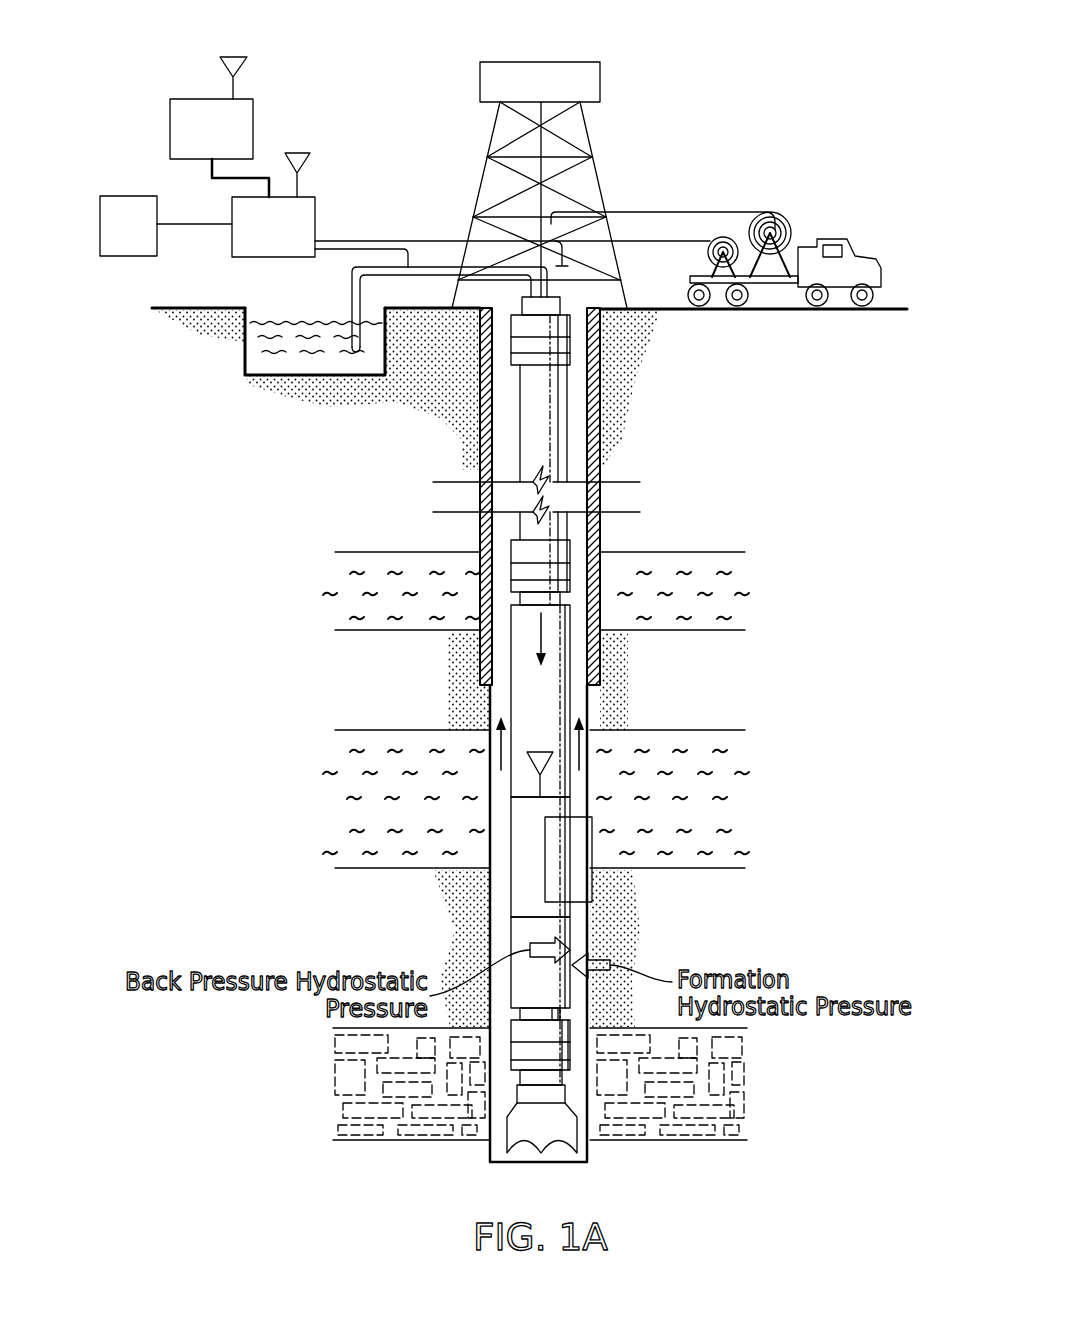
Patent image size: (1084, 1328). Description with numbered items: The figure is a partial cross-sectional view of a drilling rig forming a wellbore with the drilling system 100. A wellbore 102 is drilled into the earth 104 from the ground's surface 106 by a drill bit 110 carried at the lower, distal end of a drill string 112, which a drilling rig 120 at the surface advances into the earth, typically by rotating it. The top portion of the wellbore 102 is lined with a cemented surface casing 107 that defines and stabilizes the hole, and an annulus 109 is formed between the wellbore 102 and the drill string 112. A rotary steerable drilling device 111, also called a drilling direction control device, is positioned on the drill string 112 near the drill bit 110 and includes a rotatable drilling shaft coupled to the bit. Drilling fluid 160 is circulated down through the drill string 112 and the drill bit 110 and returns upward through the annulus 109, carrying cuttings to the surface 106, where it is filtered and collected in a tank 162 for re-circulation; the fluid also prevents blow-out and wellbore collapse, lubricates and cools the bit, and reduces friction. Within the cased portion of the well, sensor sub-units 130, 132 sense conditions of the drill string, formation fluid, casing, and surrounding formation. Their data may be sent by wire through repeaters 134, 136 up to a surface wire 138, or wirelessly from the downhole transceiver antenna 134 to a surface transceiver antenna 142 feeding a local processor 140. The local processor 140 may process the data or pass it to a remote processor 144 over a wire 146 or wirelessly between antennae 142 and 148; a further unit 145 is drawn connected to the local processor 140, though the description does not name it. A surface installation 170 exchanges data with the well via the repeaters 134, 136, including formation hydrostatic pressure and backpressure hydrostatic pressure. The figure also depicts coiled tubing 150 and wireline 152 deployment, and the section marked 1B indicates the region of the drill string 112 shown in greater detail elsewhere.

The drilling system 100 is at (698, 33).
The wellbore 102 is at (589, 941).
The earth 104 is at (447, 434).
The surface 106 is at (176, 305).
The surface casing 107 is at (602, 465).
The annulus 109 is at (507, 445).
The drill bit 110 is at (567, 1135).
The rotary steerable drilling device 111 is at (562, 1050).
The drill string 112 is at (540, 437).
The drilling rig 120 is at (607, 148).
The sensor sub-unit 130 is at (568, 310).
The sensor sub-unit 132 is at (506, 555).
The repeater (downhole transceiver antenna) 134 is at (547, 750).
The repeater 136 is at (545, 345).
The surface wire 138 is at (370, 238).
The local processor 140 is at (240, 233).
The surface transceiver (antenna) 142 is at (305, 157).
The remote processor 144 is at (255, 128).
The storage / processing unit 145 is at (130, 257).
The wire 146 is at (207, 168).
The antenna 148 is at (240, 57).
The coiled tubing 150 is at (800, 197).
The wireline 152 is at (698, 257).
The drilling fluid (mud) 160 is at (280, 360).
The tank 162 is at (245, 346).
The surface installation 170 is at (328, 203).
The section view 1B is at (592, 817).